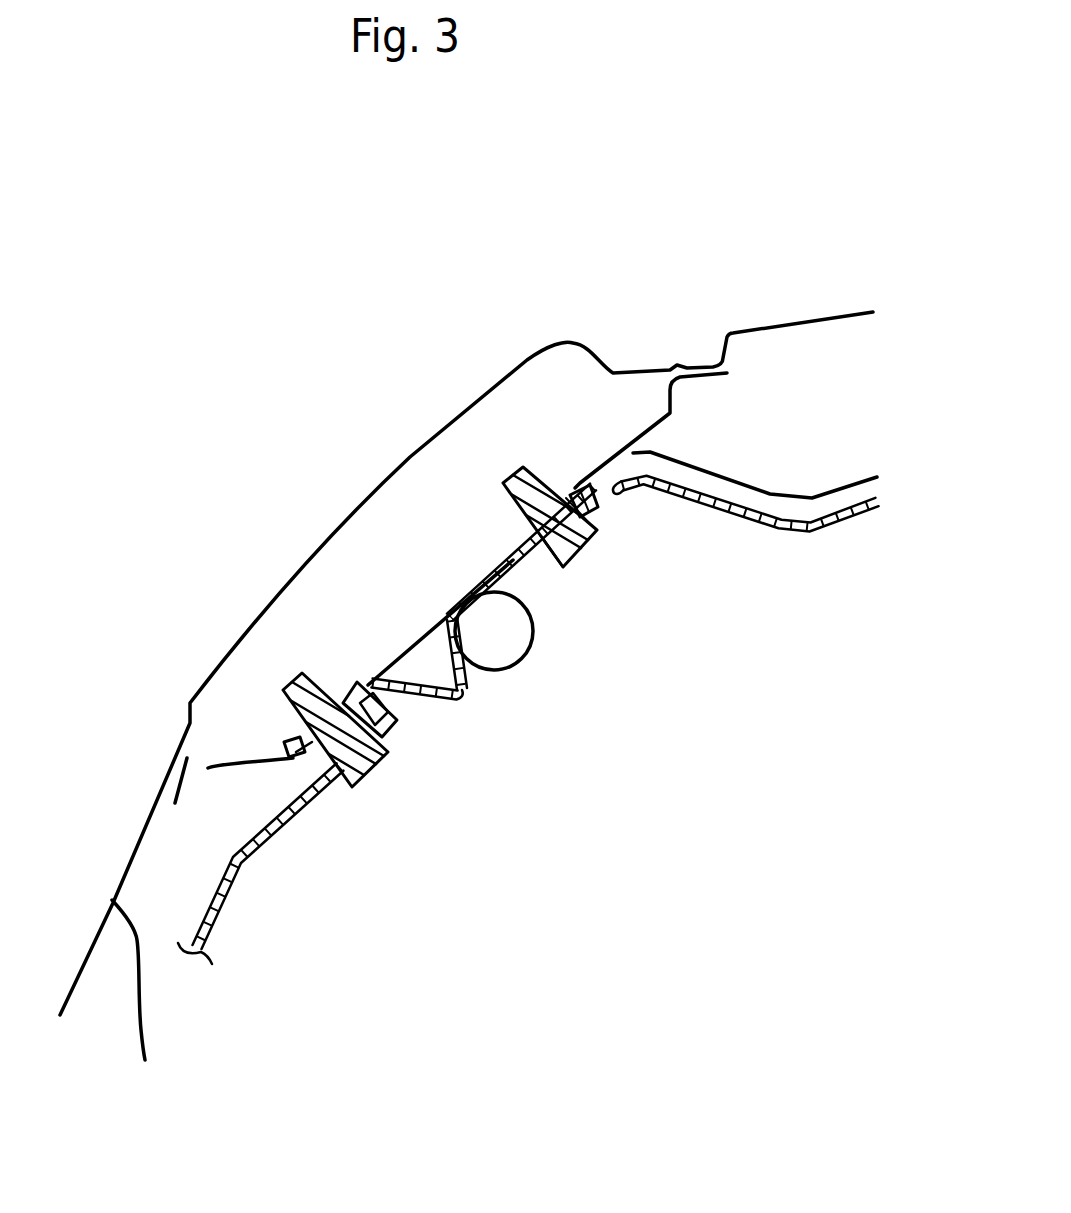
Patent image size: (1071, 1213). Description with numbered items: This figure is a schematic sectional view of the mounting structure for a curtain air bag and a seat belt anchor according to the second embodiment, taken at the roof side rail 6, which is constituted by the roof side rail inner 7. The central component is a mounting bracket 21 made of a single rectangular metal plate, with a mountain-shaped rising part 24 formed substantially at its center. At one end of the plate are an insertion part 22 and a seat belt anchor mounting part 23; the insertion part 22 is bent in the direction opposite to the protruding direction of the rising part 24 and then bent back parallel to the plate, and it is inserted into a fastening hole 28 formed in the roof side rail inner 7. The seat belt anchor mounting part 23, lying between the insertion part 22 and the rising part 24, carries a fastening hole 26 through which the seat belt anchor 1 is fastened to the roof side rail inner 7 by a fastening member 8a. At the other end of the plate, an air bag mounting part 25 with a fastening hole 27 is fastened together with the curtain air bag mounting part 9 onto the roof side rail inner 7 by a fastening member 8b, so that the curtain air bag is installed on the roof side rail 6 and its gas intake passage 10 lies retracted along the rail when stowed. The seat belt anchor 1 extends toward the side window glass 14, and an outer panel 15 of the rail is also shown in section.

The seat belt anchor 1 is at (246, 940).
The roof side rail 6 is at (400, 441).
The roof side rail inner 7 is at (647, 427).
The fastening member 8a is at (367, 757).
The fastening member 8b is at (577, 547).
The curtain air bag mounting part 9 is at (540, 562).
The gas intake passage 10 is at (533, 643).
The side window glass 14 is at (142, 1004).
The flange strip 15 is at (746, 514).
The mounting bracket 21 is at (442, 743).
The insertion part 22 is at (288, 747).
The seat belt anchor mounting part 23 is at (353, 700).
The rising part 24 is at (470, 697).
The air bag mounting part 25 is at (578, 488).
The fastening hole 26 is at (291, 722).
The fastening hole 27 is at (557, 479).
The fastening hole 28 is at (307, 769).